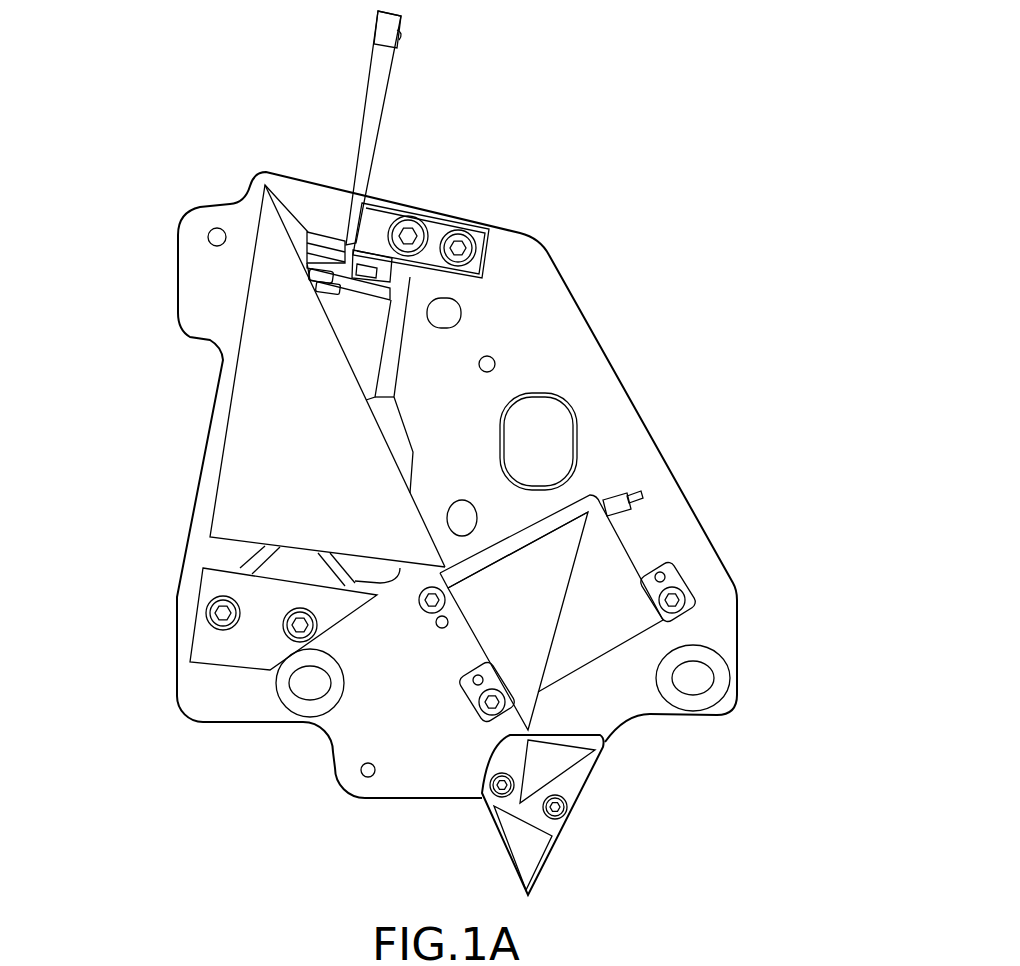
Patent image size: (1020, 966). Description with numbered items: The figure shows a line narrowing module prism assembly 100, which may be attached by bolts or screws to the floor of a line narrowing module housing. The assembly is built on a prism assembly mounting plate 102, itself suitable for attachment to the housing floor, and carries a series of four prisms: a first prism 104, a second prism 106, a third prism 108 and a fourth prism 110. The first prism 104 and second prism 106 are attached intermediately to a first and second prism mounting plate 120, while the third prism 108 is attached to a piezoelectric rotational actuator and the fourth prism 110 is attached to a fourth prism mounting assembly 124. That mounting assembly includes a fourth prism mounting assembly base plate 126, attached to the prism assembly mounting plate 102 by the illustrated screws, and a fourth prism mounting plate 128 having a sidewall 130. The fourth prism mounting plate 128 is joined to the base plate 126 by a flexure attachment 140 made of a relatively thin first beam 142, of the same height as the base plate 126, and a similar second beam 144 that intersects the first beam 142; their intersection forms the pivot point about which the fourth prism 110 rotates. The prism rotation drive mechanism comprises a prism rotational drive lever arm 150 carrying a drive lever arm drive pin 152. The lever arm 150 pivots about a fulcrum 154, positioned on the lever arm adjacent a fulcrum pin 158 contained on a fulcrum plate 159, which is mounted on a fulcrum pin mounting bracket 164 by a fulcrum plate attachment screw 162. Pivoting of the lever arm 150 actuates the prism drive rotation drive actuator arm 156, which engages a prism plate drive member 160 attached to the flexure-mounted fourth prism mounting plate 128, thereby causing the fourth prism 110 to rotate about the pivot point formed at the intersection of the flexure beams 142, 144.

The line narrowing module prism assembly 100 is at (692, 452).
The prism assembly mounting plate 102 is at (567, 342).
The first prism 104 is at (527, 847).
The second prism 106 is at (552, 763).
The third prism 108 is at (560, 567).
The fourth prism 110 is at (237, 482).
The first and second prism mounting plate 120 is at (510, 755).
The fourth prism mounting assembly 124 is at (600, 637).
The fourth prism mounting assembly base plate 126 is at (220, 587).
The fourth prism mounting plate 128 is at (370, 347).
The sidewall 130 is at (383, 410).
The flexure attachment 140 is at (226, 548).
The first beam 142 is at (247, 568).
The second beam 144 is at (338, 573).
The prism rotational drive lever arm 150 is at (360, 113).
The drive lever arm drive pin 152 is at (403, 29).
The fulcrum 154 is at (314, 280).
The prism drive rotation drive actuator arm 156 is at (327, 287).
The fulcrum pin 158 is at (352, 260).
The fulcrum plate 159 is at (403, 265).
The prism plate drive member 160 is at (383, 300).
The fulcrum plate attachment screw 162 is at (362, 263).
The fulcrum pin mounting bracket 164 is at (482, 237).